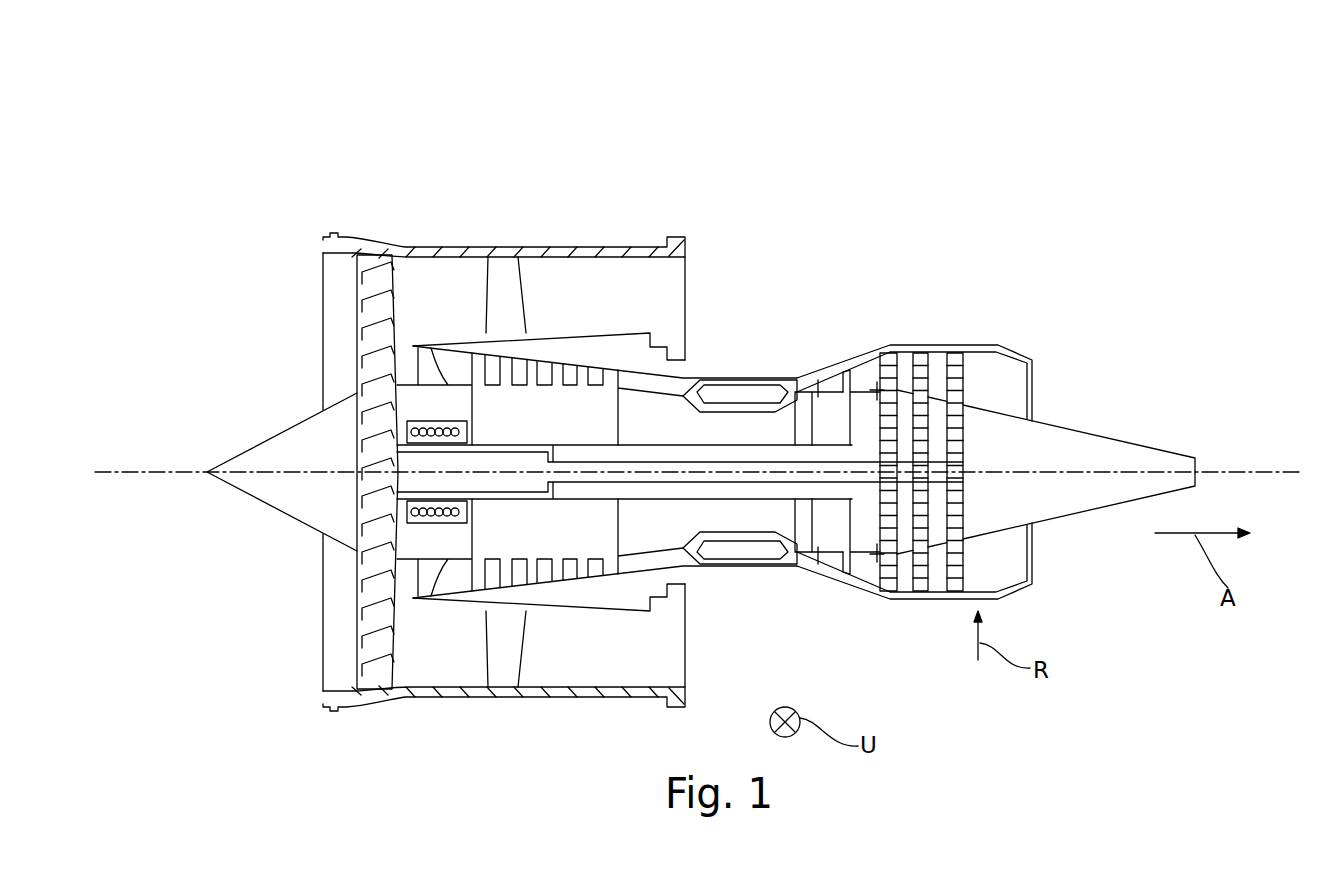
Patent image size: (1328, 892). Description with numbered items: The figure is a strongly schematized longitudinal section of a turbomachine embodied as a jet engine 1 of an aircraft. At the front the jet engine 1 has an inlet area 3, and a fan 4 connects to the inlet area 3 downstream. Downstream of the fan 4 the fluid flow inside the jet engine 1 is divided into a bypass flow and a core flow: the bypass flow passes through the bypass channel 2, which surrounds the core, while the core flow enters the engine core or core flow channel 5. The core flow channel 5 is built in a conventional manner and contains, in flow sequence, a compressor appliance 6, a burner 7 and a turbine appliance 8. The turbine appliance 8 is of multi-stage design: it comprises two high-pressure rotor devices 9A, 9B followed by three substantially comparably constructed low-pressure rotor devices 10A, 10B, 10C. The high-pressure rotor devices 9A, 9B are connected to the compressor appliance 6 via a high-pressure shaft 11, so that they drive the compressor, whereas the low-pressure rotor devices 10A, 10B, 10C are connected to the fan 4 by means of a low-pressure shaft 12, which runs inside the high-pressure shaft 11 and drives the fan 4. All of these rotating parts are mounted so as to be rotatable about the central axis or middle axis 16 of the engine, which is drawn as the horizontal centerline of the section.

The jet engine 1 is at (537, 213).
The bypass channel 2 is at (625, 283).
The inlet area 3 is at (340, 345).
The fan 4 is at (374, 290).
The core flow channel 5 is at (457, 580).
The compressor appliance 6 is at (550, 596).
The burner 7 is at (775, 548).
The turbine appliance 8 is at (888, 598).
The high-pressure rotor device 9A is at (799, 388).
The high-pressure rotor device 9B is at (853, 388).
The low-pressure rotor device 10A is at (883, 355).
The low-pressure rotor device 10B is at (921, 358).
The low-pressure rotor device 10C is at (955, 355).
The high-pressure shaft 11 is at (710, 455).
The low-pressure shaft 12 is at (737, 488).
The middle axis 16 is at (1100, 470).